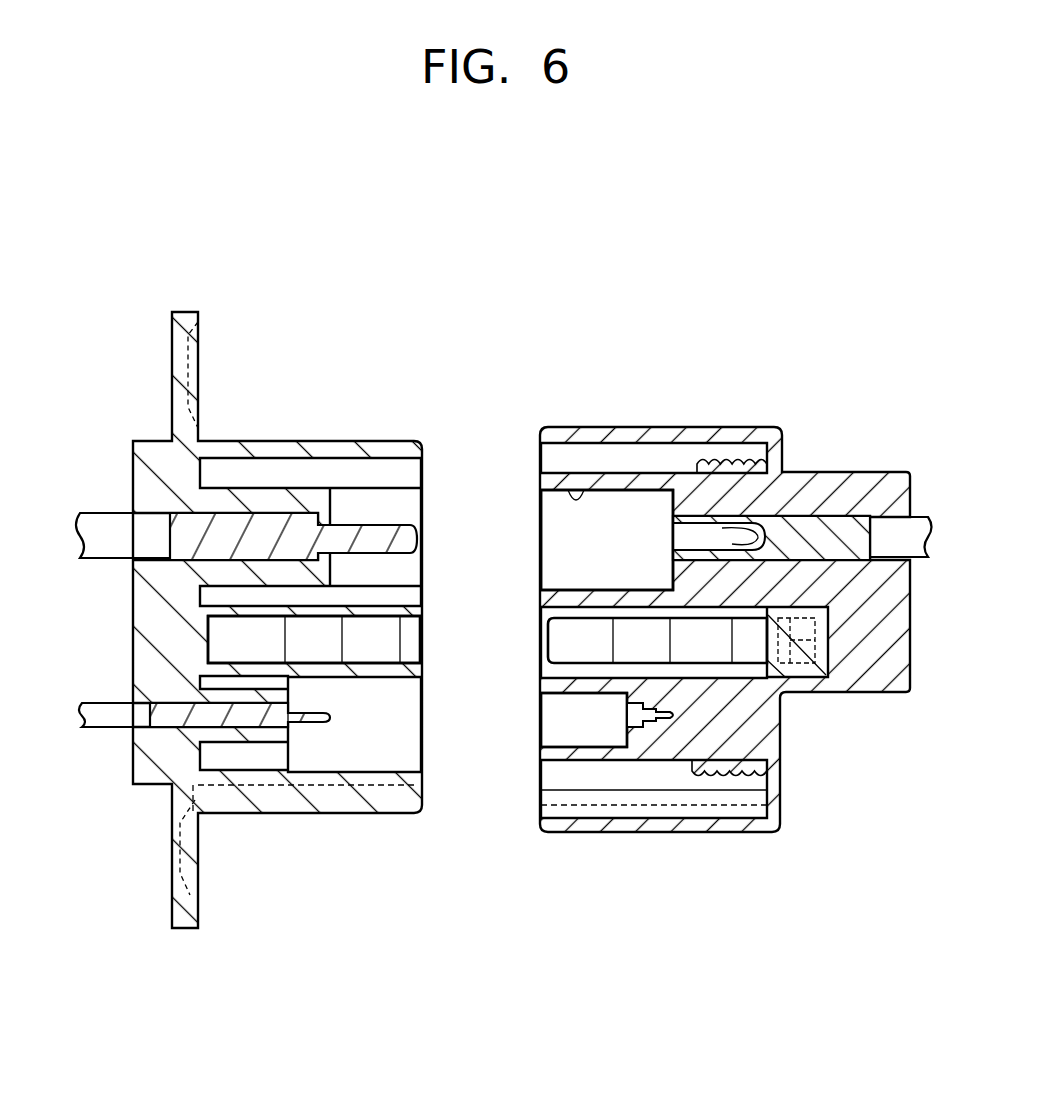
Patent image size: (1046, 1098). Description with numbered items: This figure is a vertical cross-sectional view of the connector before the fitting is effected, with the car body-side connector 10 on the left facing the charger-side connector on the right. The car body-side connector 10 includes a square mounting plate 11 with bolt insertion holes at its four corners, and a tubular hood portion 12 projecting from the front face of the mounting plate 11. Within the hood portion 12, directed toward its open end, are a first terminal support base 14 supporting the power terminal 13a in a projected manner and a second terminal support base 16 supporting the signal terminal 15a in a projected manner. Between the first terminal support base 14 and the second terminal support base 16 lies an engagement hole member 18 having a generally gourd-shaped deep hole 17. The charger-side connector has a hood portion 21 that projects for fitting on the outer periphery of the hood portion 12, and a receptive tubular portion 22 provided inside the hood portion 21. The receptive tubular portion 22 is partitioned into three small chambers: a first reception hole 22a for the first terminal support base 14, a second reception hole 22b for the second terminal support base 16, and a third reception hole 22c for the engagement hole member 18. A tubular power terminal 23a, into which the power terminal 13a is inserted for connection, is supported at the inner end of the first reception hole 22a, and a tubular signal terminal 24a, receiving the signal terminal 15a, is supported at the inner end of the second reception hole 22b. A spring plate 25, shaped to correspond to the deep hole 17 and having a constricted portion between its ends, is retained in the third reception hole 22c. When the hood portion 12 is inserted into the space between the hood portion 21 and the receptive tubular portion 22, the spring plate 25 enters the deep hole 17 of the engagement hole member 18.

The car body-side connector 10 is at (276, 598).
The mounting plate 11 is at (197, 320).
The hood portion 12 is at (260, 441).
The power terminal 13a is at (412, 524).
The first terminal support base 14 is at (322, 490).
The signal terminal 15a is at (323, 722).
The second terminal support base 16 is at (290, 730).
The deep hole 17 is at (418, 638).
The engagement hole member 18 is at (403, 678).
The hood portion 21 is at (705, 616).
The receptive tubular portion 22 is at (623, 482).
The first reception hole 22a is at (568, 490).
The second reception hole 22b is at (547, 733).
The third reception hole 22c is at (546, 608).
The tubular power terminal 23a is at (783, 473).
The tubular signal terminal 24a is at (633, 727).
The spring plate 25 is at (548, 642).